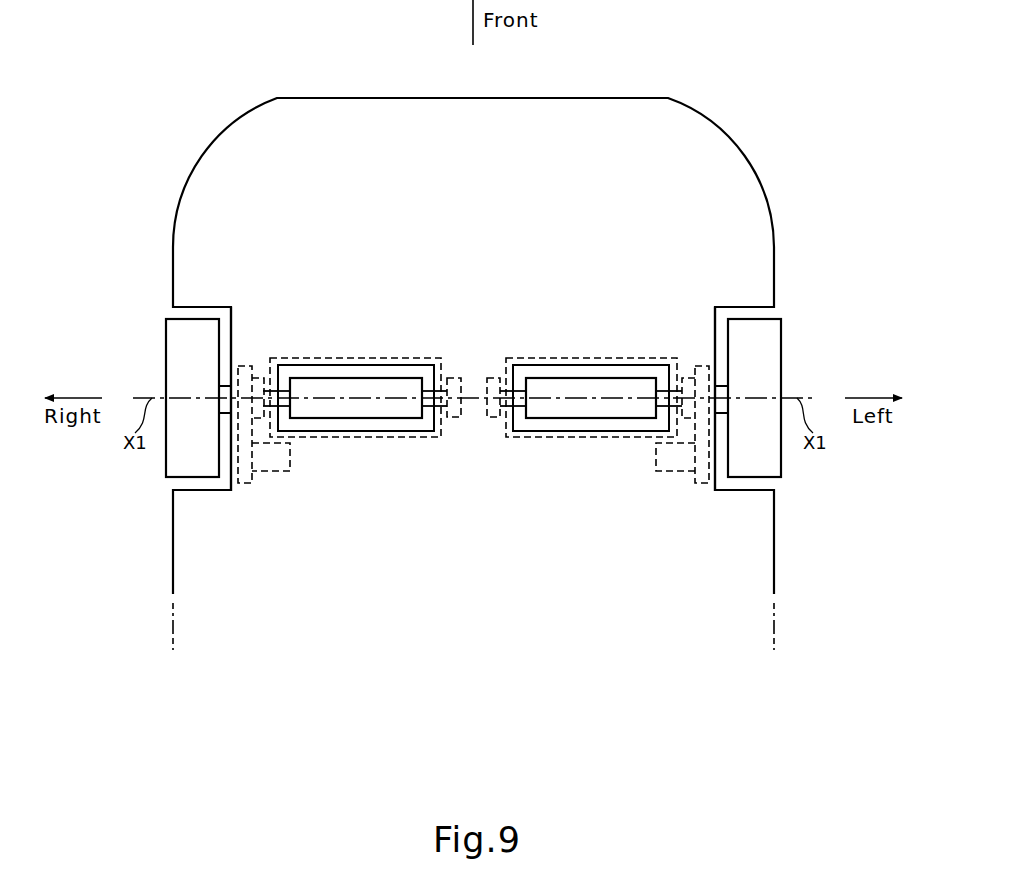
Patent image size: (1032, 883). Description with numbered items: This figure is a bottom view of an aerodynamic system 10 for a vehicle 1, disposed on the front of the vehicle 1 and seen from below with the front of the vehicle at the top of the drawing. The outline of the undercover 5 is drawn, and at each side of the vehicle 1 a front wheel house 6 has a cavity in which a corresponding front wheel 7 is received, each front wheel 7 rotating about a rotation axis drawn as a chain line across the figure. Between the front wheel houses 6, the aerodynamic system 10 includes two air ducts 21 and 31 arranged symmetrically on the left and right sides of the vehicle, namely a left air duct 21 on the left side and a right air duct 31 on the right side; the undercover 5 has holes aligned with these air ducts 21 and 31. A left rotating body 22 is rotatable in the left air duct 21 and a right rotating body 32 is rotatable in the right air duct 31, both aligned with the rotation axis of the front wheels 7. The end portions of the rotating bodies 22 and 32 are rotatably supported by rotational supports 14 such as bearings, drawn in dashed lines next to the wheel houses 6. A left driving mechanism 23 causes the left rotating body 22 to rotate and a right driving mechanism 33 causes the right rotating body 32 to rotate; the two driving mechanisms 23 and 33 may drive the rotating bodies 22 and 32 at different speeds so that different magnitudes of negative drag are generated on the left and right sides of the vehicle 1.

The vehicle 1 is at (473, 326).
The undercover 5 is at (342, 123).
The front wheel house 6 is at (205, 491).
The front wheel 7 is at (183, 352).
The aerodynamic system 10 is at (473, 413).
The rotational support 14 is at (258, 378).
The left air duct 21 is at (584, 413).
The left rotating body 22 is at (590, 378).
The left driving mechanism 23 is at (701, 499).
The right air duct 31 is at (362, 413).
The right rotating body 32 is at (355, 378).
The right driving mechanism 33 is at (247, 499).